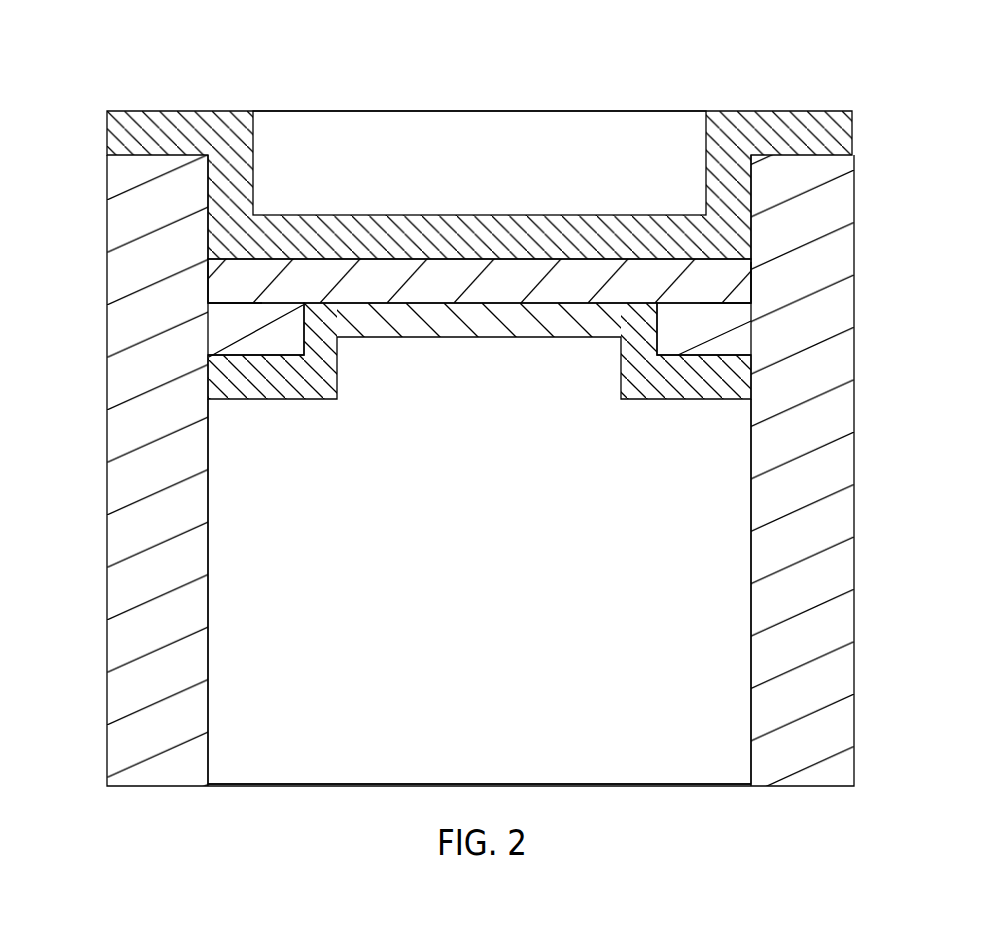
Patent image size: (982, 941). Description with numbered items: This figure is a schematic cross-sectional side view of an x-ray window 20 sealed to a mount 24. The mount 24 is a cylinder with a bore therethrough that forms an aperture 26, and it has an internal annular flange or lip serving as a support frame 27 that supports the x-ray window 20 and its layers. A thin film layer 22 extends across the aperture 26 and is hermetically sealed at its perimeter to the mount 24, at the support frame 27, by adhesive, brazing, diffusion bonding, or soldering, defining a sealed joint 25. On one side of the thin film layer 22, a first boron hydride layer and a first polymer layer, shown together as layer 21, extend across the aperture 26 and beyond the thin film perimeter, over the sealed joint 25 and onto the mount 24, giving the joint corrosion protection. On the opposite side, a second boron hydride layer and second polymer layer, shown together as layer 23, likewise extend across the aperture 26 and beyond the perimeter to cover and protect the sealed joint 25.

The x-ray window 20 is at (131, 38).
The layer 21 is at (525, 215).
The thin film layer 22 is at (228, 282).
The layer 23 is at (382, 327).
The mount 24 is at (760, 662).
The sealed joint 25 is at (258, 300).
The aperture 26 is at (420, 76).
The support frame 27 is at (260, 330).